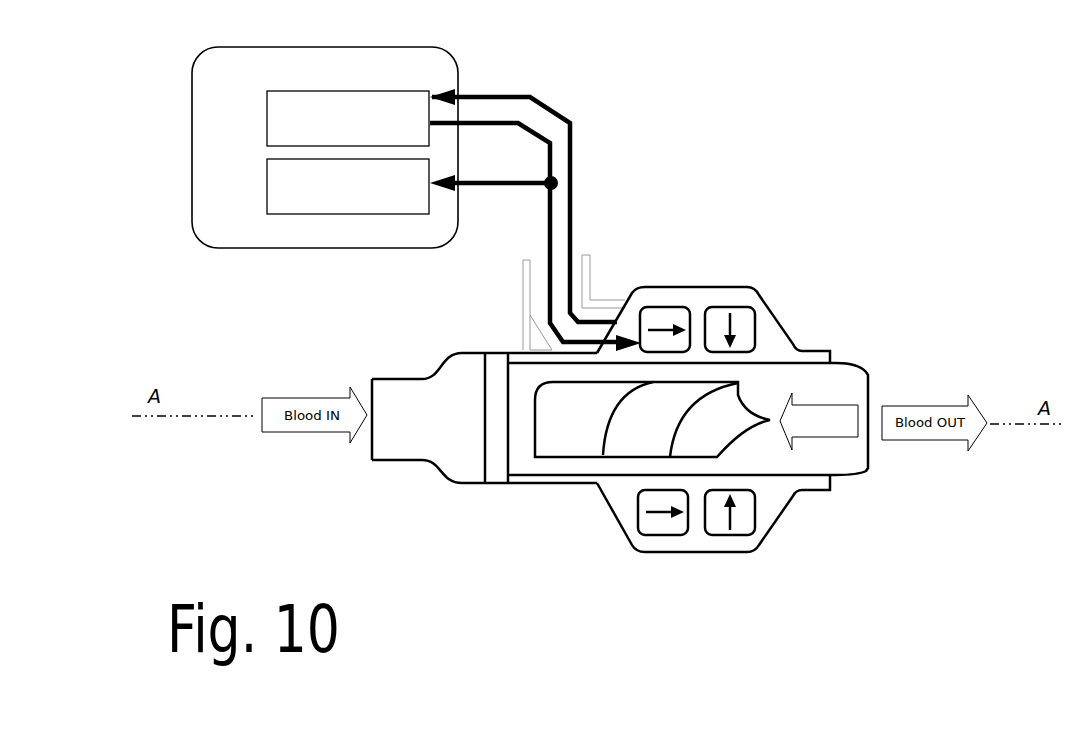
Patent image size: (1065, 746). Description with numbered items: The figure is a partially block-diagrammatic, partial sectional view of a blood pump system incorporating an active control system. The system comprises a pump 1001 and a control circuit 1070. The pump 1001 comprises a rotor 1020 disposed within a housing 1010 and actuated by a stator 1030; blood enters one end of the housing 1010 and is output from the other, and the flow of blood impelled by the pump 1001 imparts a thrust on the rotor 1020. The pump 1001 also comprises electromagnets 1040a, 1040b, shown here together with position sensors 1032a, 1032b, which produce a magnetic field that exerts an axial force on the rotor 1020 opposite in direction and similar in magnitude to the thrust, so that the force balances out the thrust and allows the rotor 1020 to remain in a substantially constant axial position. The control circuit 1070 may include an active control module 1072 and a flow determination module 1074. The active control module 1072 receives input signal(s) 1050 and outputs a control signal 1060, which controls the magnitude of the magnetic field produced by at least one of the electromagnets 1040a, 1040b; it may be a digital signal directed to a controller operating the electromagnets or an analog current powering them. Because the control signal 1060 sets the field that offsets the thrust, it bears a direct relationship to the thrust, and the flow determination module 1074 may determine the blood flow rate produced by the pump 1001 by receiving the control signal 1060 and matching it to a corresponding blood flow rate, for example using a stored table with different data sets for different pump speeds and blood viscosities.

The pump 1001 is at (410, 342).
The housing 1010 is at (869, 368).
The rotor 1020 is at (562, 455).
The stator 1030 is at (763, 296).
The position sensor (upper) 1032a is at (757, 328).
The position sensor (lower) 1032b is at (750, 507).
The electromagnet 1040a is at (653, 533).
The electromagnet 1040b is at (657, 307).
The input signal 1050 is at (564, 112).
The control signal 1060 is at (547, 213).
The control circuit 1070 is at (208, 52).
The active control module 1072 is at (267, 127).
The flow determination module 1074 is at (267, 186).